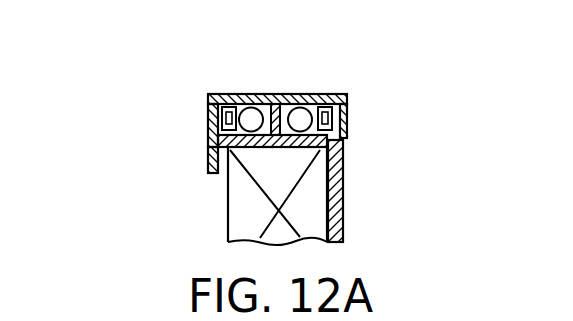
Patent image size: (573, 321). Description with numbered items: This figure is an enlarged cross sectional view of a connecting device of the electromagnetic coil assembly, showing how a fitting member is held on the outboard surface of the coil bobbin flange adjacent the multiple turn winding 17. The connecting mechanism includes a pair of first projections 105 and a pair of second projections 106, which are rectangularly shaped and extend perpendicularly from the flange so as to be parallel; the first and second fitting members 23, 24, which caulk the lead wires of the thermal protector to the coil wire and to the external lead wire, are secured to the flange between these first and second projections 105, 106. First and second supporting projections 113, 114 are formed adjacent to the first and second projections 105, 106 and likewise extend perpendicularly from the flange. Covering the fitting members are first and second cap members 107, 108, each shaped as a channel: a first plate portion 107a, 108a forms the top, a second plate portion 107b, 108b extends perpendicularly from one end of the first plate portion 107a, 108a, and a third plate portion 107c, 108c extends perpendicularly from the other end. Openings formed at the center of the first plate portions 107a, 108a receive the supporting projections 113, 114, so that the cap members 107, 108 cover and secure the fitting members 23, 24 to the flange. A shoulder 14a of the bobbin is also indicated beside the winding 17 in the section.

The first cap member 107 is at (280, 82).
The second cap member 108 is at (348, 96).
The first plate portion 107a is at (317, 61).
The first plate portion 108a is at (300, 95).
The second plate portion 107b is at (124, 120).
The second plate portion 108b is at (205, 113).
The third plate portion 107c is at (435, 122).
The third plate portion 108c is at (347, 115).
The first projections 105 is at (267, 105).
The second projections 106 is at (207, 110).
The first supporting projection 113 is at (262, 97).
The second supporting projection 114 is at (282, 95).
The shaft shoulder 14a is at (207, 132).
The first fitting member 23 is at (384, 191).
The second fitting member 24 is at (345, 197).
The multiple turn winding 17 is at (222, 213).